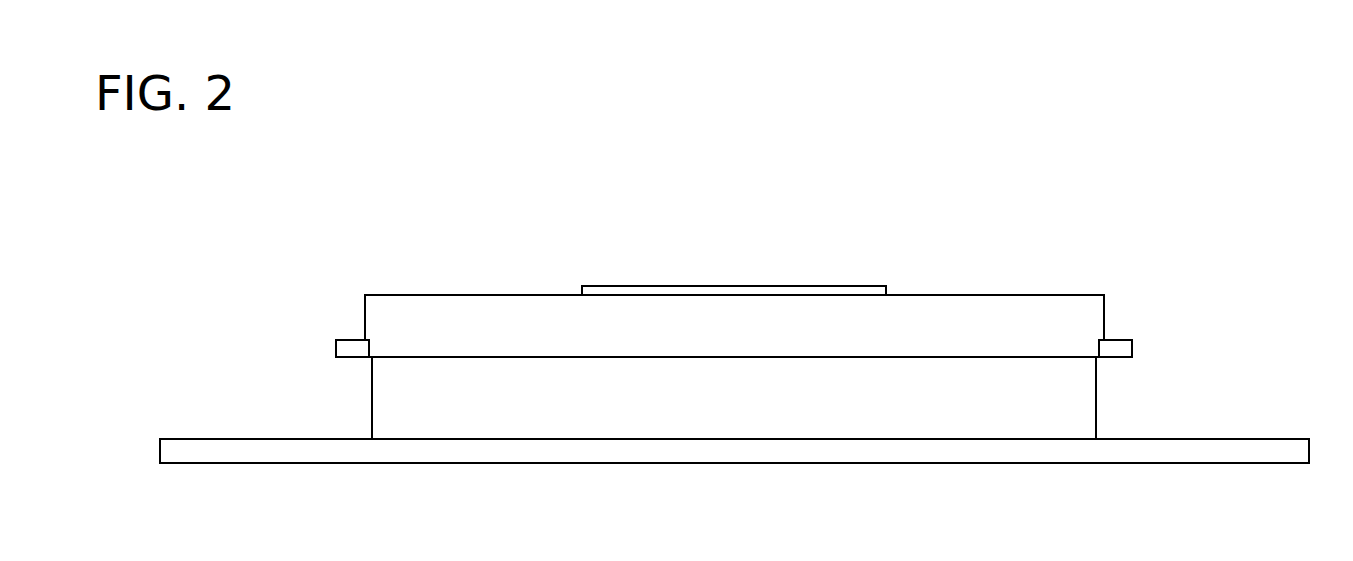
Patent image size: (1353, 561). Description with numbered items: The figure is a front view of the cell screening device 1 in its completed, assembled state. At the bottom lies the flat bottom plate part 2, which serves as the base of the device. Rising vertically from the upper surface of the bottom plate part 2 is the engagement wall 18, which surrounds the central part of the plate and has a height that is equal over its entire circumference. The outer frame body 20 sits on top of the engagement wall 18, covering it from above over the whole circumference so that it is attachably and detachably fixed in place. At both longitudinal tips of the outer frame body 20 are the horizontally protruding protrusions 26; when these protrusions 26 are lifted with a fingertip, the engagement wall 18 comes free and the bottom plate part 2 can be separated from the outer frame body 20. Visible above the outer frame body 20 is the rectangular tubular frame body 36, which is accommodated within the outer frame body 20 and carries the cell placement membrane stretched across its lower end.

The cell screening device 1 is at (1203, 190).
The bottom plate part 2 is at (1268, 439).
The engagement wall 18 is at (1097, 401).
The outer frame body 20 is at (1022, 295).
The protrusions 26 is at (336, 346).
The frame body 36 is at (733, 286).